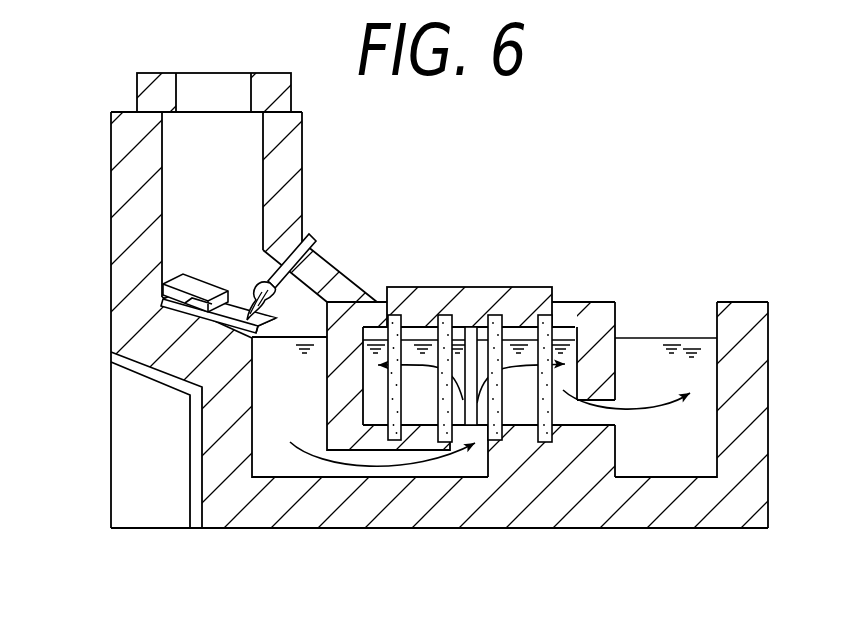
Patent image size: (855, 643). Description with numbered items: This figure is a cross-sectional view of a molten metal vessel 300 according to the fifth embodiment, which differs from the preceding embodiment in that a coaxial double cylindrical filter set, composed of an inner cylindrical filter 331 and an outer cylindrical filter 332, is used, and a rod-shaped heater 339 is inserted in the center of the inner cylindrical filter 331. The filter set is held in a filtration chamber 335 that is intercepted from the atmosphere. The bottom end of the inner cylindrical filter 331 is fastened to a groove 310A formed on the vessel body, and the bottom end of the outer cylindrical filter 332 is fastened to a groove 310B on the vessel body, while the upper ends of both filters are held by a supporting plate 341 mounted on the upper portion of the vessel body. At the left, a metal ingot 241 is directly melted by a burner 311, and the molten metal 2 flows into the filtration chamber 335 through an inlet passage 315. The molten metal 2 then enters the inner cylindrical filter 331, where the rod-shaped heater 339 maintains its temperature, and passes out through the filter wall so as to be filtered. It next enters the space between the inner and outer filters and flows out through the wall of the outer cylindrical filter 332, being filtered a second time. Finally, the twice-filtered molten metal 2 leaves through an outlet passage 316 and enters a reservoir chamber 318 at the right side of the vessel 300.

The molten metal vessel 300 is at (622, 178).
The molten metal 2 is at (268, 418).
The metal ingot 241 is at (162, 286).
The burner 311 is at (305, 241).
The inlet passage 315 is at (318, 470).
The groove 310A is at (445, 443).
The groove 310B is at (394, 440).
The outer cylindrical filter 332 is at (552, 420).
The rod-shaped heater 339 is at (480, 425).
The inner cylindrical filter 331 is at (470, 320).
The supporting plate 341 is at (497, 298).
The filtration chamber 335 is at (583, 365).
The outlet passage 316 is at (600, 407).
The reservoir chamber 318 is at (673, 367).